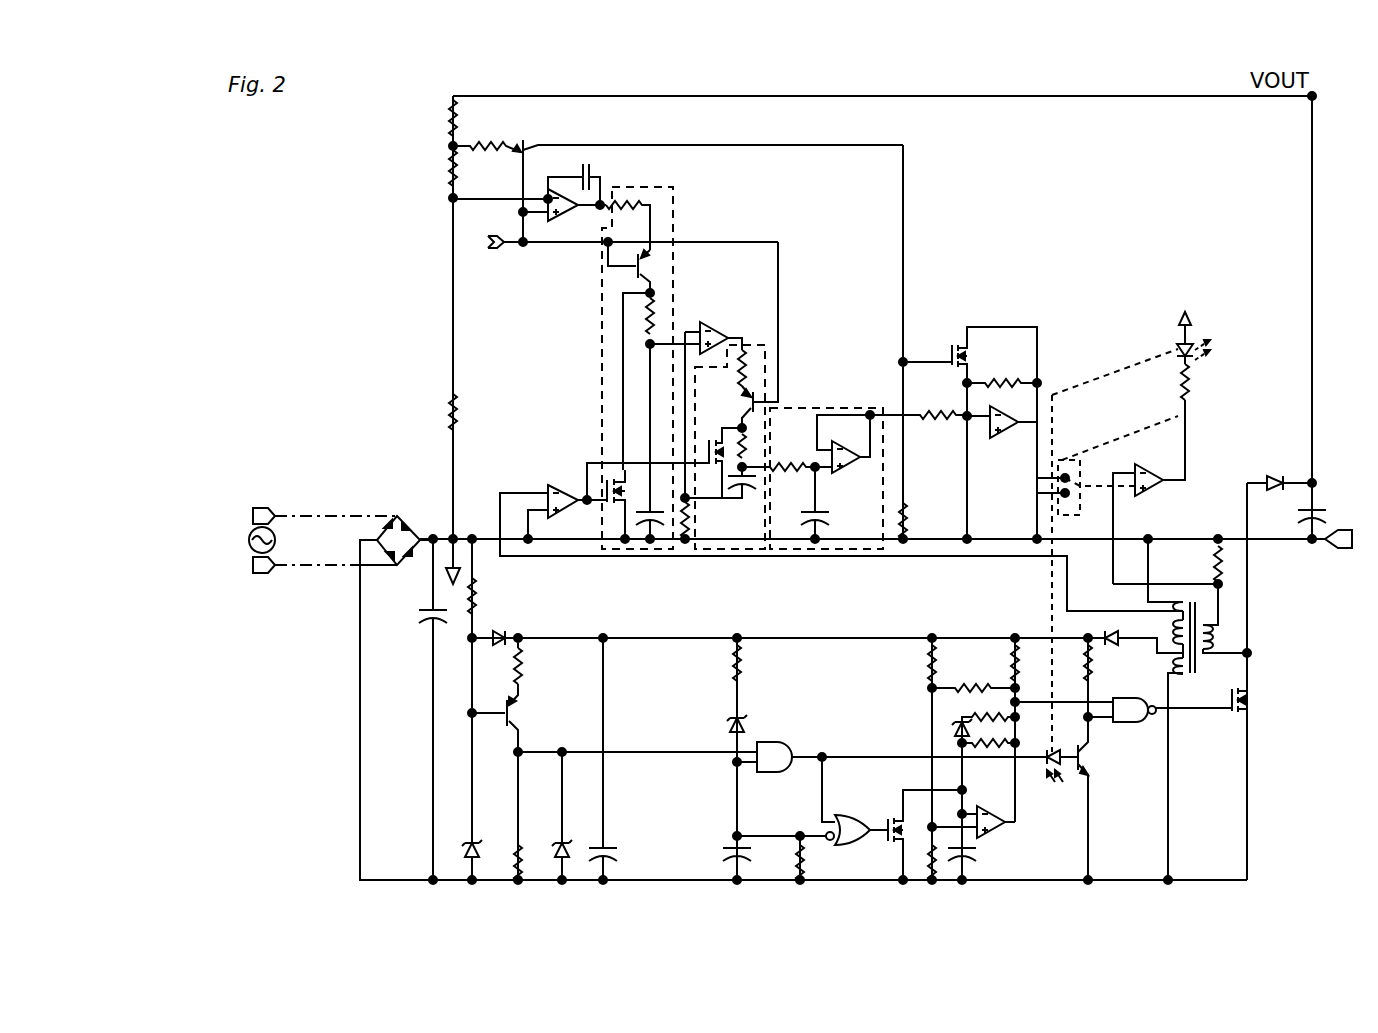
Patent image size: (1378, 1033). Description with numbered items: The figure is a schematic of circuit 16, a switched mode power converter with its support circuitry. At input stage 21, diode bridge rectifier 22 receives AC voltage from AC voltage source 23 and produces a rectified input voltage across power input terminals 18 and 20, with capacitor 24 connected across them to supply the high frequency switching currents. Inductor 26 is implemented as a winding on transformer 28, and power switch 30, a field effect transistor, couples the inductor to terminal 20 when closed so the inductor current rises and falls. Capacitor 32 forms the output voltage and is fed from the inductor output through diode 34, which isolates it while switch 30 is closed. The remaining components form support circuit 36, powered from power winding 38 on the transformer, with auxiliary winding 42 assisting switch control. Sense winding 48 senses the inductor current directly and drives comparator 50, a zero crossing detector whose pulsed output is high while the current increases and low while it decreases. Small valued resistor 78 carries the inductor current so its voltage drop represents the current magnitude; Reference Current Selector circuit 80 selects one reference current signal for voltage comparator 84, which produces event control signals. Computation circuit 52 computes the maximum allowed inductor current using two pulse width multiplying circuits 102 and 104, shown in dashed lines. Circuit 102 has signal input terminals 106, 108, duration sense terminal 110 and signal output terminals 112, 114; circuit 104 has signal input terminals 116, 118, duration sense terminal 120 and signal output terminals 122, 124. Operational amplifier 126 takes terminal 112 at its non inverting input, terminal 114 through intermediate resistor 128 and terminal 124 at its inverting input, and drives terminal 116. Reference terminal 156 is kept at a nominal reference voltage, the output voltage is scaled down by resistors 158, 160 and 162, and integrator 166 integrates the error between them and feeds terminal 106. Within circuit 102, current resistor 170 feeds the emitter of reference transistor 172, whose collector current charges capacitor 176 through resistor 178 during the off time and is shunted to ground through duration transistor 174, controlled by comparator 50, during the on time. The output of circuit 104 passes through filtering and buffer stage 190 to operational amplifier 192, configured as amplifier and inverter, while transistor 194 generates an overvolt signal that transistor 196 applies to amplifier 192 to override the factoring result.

The circuit 16 is at (354, 238).
The first power input terminal 18 is at (456, 535).
The second power input terminal 20 is at (406, 878).
The input stage 21 is at (352, 736).
The diode bridge rectifier 22 is at (397, 510).
The AC voltage source 23 is at (240, 553).
The capacitor 24 is at (420, 610).
The inductor 26 is at (1208, 641).
The transformer 28 is at (1198, 670).
The power switch 30 is at (1250, 702).
The capacitor 32 is at (1317, 506).
The diode 34 is at (1274, 478).
The support circuit 36 is at (1180, 243).
The power winding 38 is at (1178, 628).
The auxiliary winding 42 is at (1176, 662).
The sense winding 48 is at (1178, 599).
The comparator 50 is at (547, 487).
The Computation circuit 52 is at (990, 240).
The resistor 78 is at (1226, 549).
The Reference Current Selector circuit 80 is at (1063, 446).
The voltage comparator 84 is at (1146, 468).
The pulse width multiplying circuit 102 is at (677, 231).
The pulse width multiplying circuit 104 is at (763, 373).
The signal input terminal 106 is at (600, 208).
The signal input terminal 108 is at (606, 247).
The duration sense terminal 110 is at (601, 504).
The signal output terminal 112 is at (674, 340).
The signal output terminal 114 is at (575, 558).
The signal input terminal 116 is at (744, 350).
The signal input terminal 118 is at (780, 255).
The duration sense terminal 120 is at (600, 478).
The signal output terminal 122 is at (748, 466).
The signal output terminal 124 is at (742, 500).
The operational amplifier 126 is at (714, 322).
The intermediate resistor 128 is at (692, 513).
The reference terminal 156 is at (492, 248).
The resistor 158 is at (447, 121).
The resistor 160 is at (447, 166).
The resistor 162 is at (447, 412).
The integrator 166 is at (591, 165).
The current resistor 170 is at (632, 204).
The reference transistor 172 is at (632, 265).
The duration transistor 174 is at (612, 474).
The capacitor 176 is at (640, 527).
The resistor 178 is at (642, 318).
The filtering and buffer stage 190 is at (851, 408).
The operational amplifier 192 is at (1008, 434).
The transistor 194 is at (525, 147).
The transistor 196 is at (950, 338).